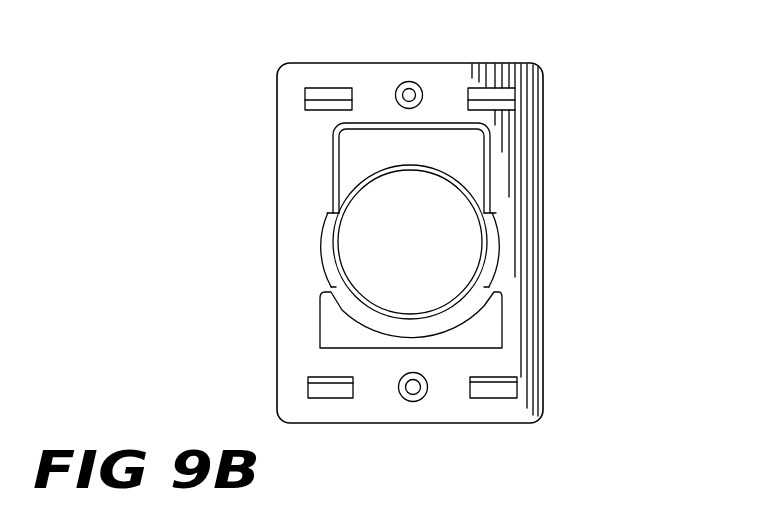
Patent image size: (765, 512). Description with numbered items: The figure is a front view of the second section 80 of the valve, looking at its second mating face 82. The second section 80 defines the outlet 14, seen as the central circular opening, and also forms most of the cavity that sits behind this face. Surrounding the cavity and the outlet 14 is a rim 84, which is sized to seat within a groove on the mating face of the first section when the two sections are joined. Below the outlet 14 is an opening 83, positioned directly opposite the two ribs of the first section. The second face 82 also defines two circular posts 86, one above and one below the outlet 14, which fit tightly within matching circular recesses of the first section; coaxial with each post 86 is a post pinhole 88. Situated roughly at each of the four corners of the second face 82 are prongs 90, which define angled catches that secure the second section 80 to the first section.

The outlet 14 is at (427, 258).
The second section 80 is at (266, 337).
The second mating face 82 is at (522, 205).
The opening 83 is at (492, 327).
The rim 84 is at (333, 172).
The circular posts 86 is at (405, 82).
The post pinholes 88 is at (416, 82).
The prongs 90 is at (322, 93).